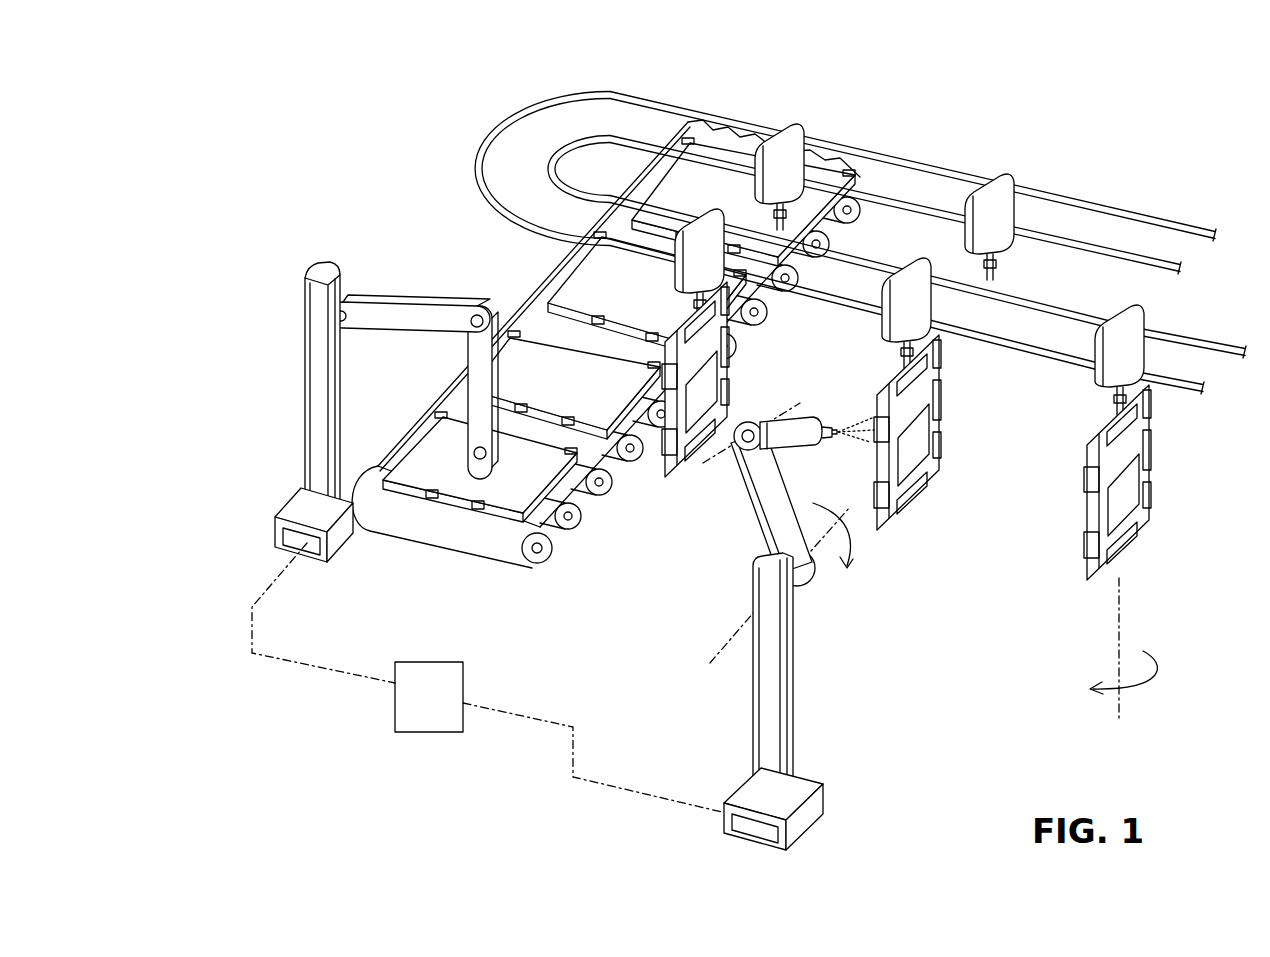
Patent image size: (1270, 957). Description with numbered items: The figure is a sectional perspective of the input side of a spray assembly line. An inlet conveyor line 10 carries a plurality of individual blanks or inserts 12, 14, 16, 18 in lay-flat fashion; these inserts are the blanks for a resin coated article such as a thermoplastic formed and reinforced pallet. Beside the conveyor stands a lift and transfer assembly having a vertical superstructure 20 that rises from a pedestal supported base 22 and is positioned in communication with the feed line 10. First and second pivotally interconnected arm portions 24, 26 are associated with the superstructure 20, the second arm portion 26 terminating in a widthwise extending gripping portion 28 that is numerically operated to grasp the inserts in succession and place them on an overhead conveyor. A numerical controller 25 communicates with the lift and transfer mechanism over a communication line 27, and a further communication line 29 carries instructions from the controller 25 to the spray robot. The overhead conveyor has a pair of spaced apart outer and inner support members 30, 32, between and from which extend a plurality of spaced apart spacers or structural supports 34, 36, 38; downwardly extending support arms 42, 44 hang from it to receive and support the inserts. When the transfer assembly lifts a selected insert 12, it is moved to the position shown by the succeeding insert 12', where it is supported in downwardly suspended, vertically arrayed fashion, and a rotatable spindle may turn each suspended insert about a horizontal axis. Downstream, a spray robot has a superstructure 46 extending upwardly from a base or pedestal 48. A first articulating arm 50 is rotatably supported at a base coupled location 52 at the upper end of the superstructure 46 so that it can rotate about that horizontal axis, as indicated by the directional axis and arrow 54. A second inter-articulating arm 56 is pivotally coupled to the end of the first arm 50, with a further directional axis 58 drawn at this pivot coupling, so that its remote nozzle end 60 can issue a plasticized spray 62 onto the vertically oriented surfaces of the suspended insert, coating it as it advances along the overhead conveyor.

The inlet conveyor line 10 is at (532, 308).
The insert 12 is at (480, 467).
The succeeding insert position 12' is at (682, 431).
The insert 14 is at (543, 381).
The insert 16 is at (614, 301).
The insert 18 is at (684, 201).
The vertical superstructure 20 is at (361, 442).
The pedestal supported base 22 is at (323, 550).
The first arm portion 24 is at (405, 308).
The numerical controller 25 is at (420, 733).
The second arm portion 26 is at (474, 404).
The communication line 27 is at (323, 613).
The gripping portion 28 is at (455, 500).
The communication line 29 is at (503, 712).
The outer support member 30 is at (831, 218).
The inner support member 32 is at (633, 137).
The structural support 34 is at (724, 255).
The structural support 36 is at (983, 200).
The structural support 38 is at (1103, 330).
The support arm 42 is at (905, 352).
The support arm 44 is at (1106, 393).
The spray robot superstructure 46 is at (751, 721).
The base or pedestal 48 is at (748, 832).
The first articulating arm 50 is at (748, 535).
The horizontal axis 52 is at (803, 578).
The directional axis and arrow 54 is at (858, 545).
The second inter-articulating arm 56 is at (795, 425).
The spray gun axis 58 is at (715, 467).
The remote nozzle end 60 is at (822, 423).
The plasticized spray 62 is at (844, 451).